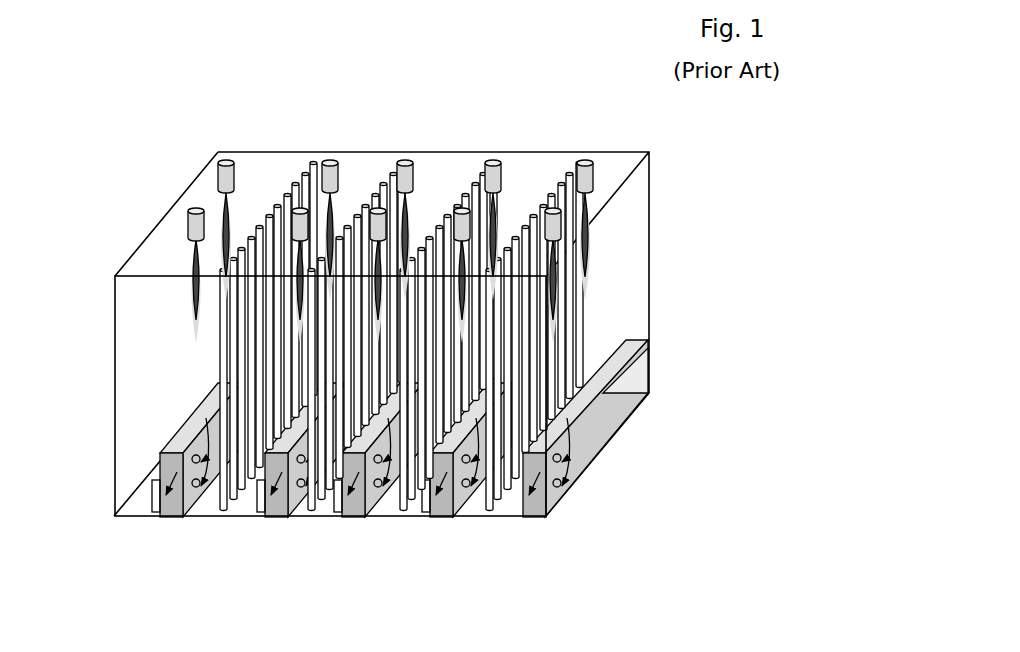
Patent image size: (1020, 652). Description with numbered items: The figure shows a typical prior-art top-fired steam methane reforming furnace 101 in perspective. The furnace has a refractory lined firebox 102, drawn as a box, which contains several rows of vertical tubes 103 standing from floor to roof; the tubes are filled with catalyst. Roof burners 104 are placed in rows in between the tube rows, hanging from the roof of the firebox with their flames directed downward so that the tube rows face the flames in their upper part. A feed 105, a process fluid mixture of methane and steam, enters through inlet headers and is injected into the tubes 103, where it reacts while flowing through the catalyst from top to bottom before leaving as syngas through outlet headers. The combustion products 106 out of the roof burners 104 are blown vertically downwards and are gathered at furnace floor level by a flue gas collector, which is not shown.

The top-fired SMR furnace 101 is at (543, 120).
The refractory lined firebox 102 is at (651, 246).
The vertical tubes 103 is at (217, 367).
The roof burners 104 is at (217, 172).
The feed 105 is at (306, 172).
The combustion products 106 is at (574, 465).